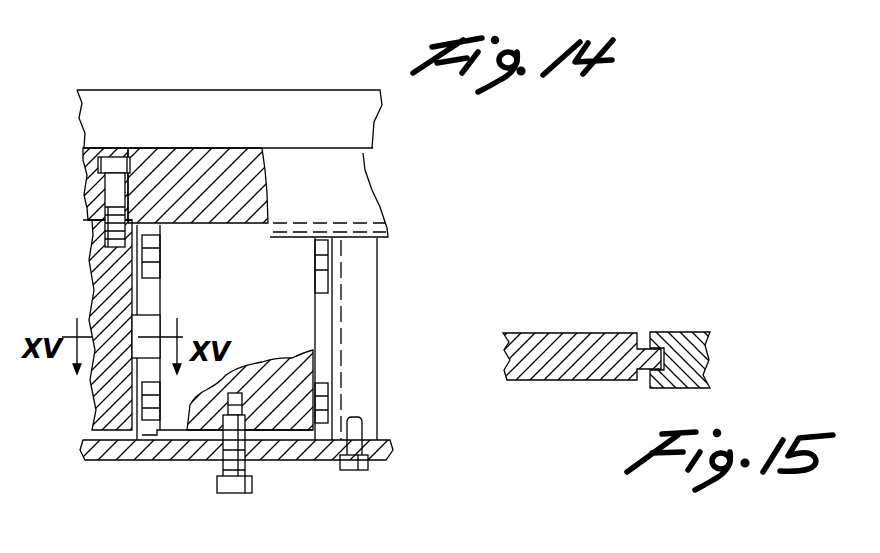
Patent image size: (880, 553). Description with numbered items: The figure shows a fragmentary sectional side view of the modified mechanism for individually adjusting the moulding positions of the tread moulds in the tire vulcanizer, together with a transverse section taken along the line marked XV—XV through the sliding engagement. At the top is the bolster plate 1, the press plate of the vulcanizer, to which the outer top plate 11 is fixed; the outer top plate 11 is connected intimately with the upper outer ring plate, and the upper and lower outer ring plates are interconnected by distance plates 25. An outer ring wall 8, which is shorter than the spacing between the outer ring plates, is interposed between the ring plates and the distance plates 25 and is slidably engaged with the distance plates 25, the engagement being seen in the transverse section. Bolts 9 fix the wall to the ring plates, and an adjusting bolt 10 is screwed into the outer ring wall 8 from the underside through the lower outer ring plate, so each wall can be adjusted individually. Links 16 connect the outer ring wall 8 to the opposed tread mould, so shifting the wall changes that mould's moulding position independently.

The bolster plate 1 is at (203, 90).
The bolts 9 is at (117, 155).
The outer top plate 11 is at (271, 237).
The links 16 is at (147, 441).
The outer ring wall 8 is at (218, 431).
The adjusting bolt 10 is at (229, 494).
The distance plates 25 is at (378, 417).